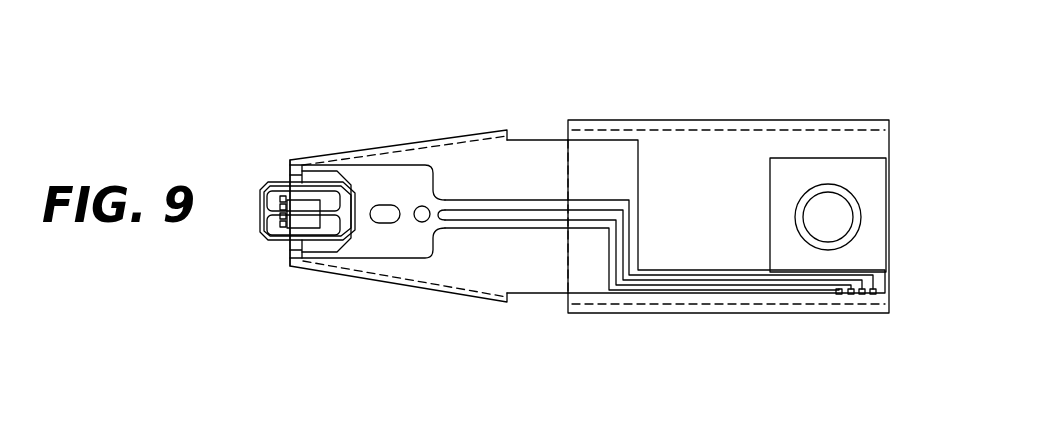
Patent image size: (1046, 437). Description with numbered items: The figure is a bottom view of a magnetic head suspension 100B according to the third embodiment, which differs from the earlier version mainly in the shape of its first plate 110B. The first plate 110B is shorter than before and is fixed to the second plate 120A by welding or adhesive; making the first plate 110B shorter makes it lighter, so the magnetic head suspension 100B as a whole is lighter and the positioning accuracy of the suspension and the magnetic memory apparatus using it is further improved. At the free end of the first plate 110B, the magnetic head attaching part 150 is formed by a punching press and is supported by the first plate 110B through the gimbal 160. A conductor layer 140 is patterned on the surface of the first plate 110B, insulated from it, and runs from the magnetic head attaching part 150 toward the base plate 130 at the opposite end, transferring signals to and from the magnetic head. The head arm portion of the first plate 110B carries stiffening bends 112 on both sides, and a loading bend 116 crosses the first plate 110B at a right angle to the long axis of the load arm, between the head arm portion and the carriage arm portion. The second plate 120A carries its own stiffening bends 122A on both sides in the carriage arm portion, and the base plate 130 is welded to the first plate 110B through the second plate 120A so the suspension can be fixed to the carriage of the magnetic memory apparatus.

The magnetic head suspension 100B is at (478, 108).
The first plate 110B is at (451, 263).
The stiffening bends 112 is at (297, 267).
The loading bend 116 is at (537, 264).
The second plate 120A is at (677, 155).
The stiffening bends 122A is at (758, 127).
The base plate 130 is at (865, 187).
The conductor layer 140 is at (375, 262).
The magnetic head attaching part 150 is at (292, 212).
The gimbal 160 is at (230, 273).